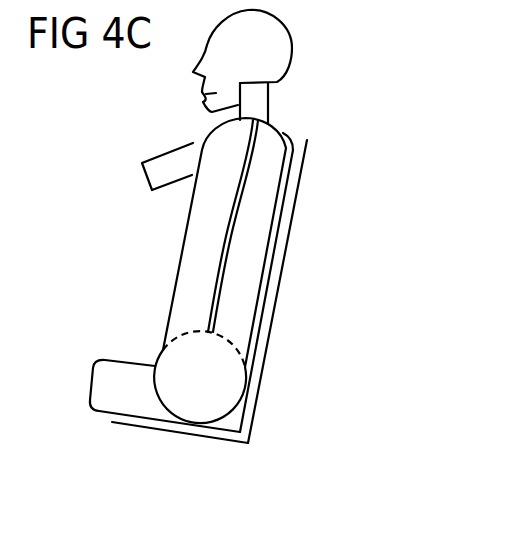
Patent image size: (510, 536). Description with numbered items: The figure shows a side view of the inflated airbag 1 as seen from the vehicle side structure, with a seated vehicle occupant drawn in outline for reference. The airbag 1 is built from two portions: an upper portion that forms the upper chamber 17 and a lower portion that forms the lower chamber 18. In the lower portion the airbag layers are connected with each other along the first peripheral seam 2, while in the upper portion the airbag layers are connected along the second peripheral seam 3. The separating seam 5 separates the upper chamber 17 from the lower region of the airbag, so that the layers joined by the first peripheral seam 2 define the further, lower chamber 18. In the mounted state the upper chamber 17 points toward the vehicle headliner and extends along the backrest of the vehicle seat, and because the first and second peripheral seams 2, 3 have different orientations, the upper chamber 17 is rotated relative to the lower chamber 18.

The airbag 1 is at (280, 115).
The first peripheral seam 2 is at (233, 413).
The second peripheral seam 3 is at (250, 172).
The separating seam 5 is at (233, 343).
The upper chamber 17 is at (255, 233).
The lower chamber 18 is at (223, 380).